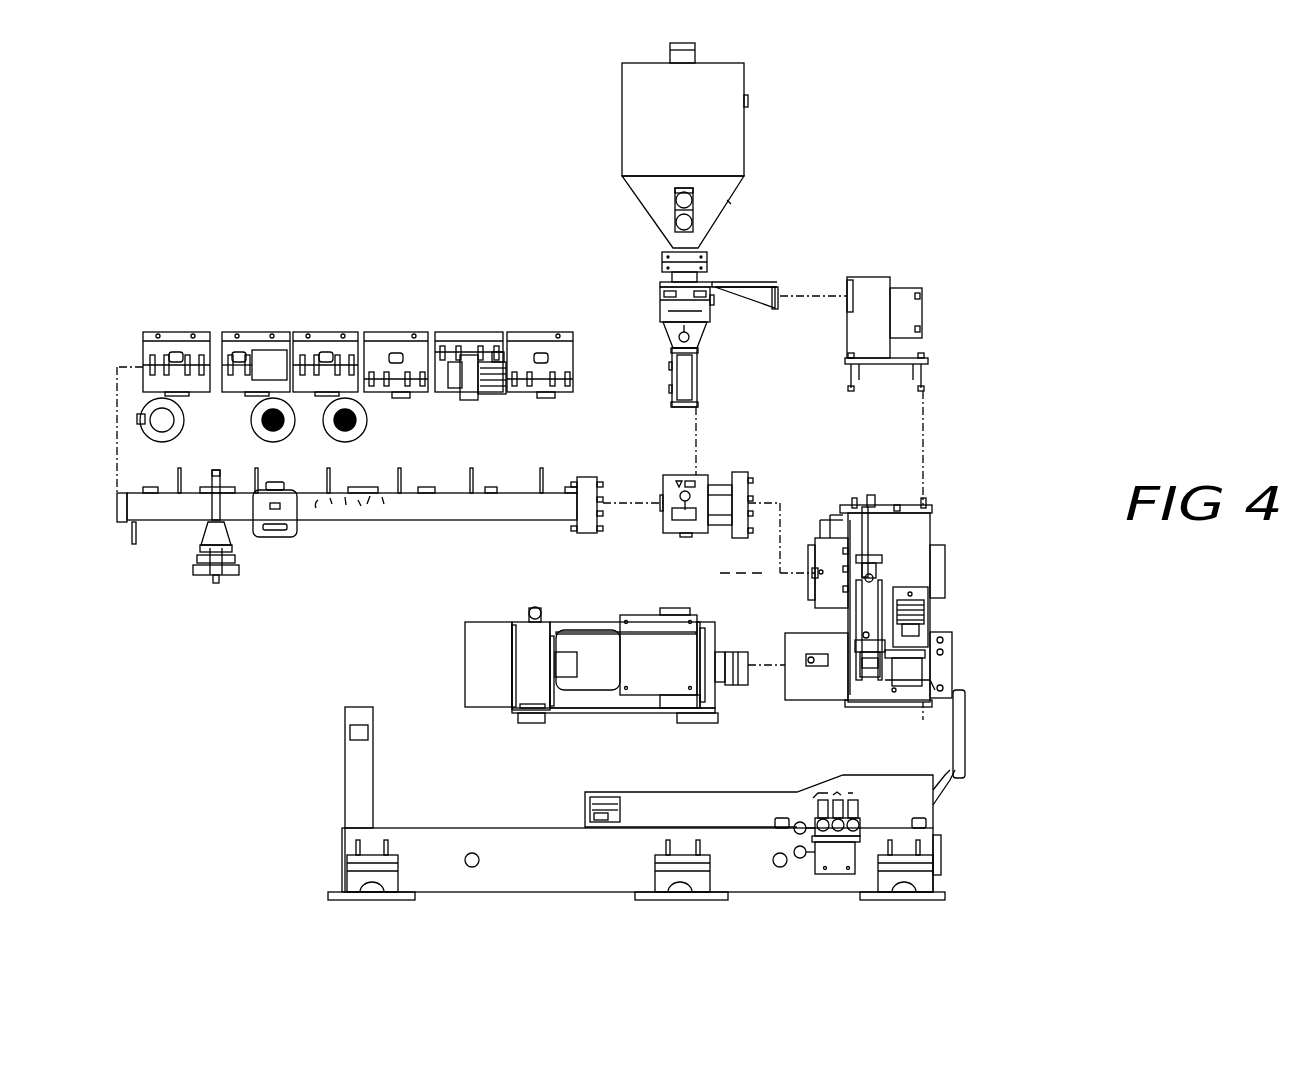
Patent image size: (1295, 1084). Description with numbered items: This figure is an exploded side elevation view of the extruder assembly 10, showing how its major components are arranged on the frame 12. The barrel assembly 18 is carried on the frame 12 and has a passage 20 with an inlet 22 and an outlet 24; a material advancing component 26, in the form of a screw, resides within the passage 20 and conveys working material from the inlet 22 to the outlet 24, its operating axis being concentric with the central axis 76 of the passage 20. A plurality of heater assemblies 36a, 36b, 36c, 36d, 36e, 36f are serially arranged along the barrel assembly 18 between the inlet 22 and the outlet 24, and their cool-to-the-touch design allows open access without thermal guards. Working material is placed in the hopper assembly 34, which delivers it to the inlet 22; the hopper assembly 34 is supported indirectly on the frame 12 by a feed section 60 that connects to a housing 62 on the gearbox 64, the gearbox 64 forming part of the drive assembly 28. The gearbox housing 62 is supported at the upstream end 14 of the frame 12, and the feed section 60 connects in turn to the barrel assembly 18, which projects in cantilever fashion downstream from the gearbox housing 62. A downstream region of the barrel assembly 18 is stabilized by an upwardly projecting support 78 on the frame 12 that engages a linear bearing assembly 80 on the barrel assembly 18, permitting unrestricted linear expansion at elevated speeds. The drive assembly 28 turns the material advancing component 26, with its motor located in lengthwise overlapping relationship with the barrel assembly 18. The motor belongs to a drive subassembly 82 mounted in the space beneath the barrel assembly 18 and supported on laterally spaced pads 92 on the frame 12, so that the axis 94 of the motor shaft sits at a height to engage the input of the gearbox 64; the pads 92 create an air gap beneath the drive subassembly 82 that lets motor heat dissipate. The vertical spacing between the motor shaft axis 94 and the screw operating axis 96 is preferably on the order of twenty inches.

The extruder assembly 10 is at (985, 297).
The frame 12 is at (505, 878).
The upstream end 14 is at (623, 505).
The barrel assembly 18 is at (122, 536).
The passage 20 is at (402, 526).
The inlet 22 is at (600, 493).
The outlet 24 is at (115, 505).
The material advancing component 26 is at (355, 520).
The drive assembly 28 is at (678, 737).
The hopper assembly 34 is at (782, 150).
The heater assembly 36a is at (520, 355).
The heater assembly 36b is at (452, 350).
The heater assembly 36c is at (390, 350).
The heater assembly 36d is at (308, 345).
The heater assembly 36e is at (240, 345).
The heater assembly 36f is at (165, 345).
The feed section 60 is at (725, 476).
The gearbox housing 62 is at (905, 540).
The gearbox 64 is at (895, 572).
The central axis 76 is at (645, 506).
The support 78 is at (343, 768).
The linear bearing assembly 80 is at (212, 584).
The drive subassembly 82 is at (600, 690).
The pads 92 is at (745, 795).
The axis 94 is at (763, 660).
The axis 96 is at (788, 574).